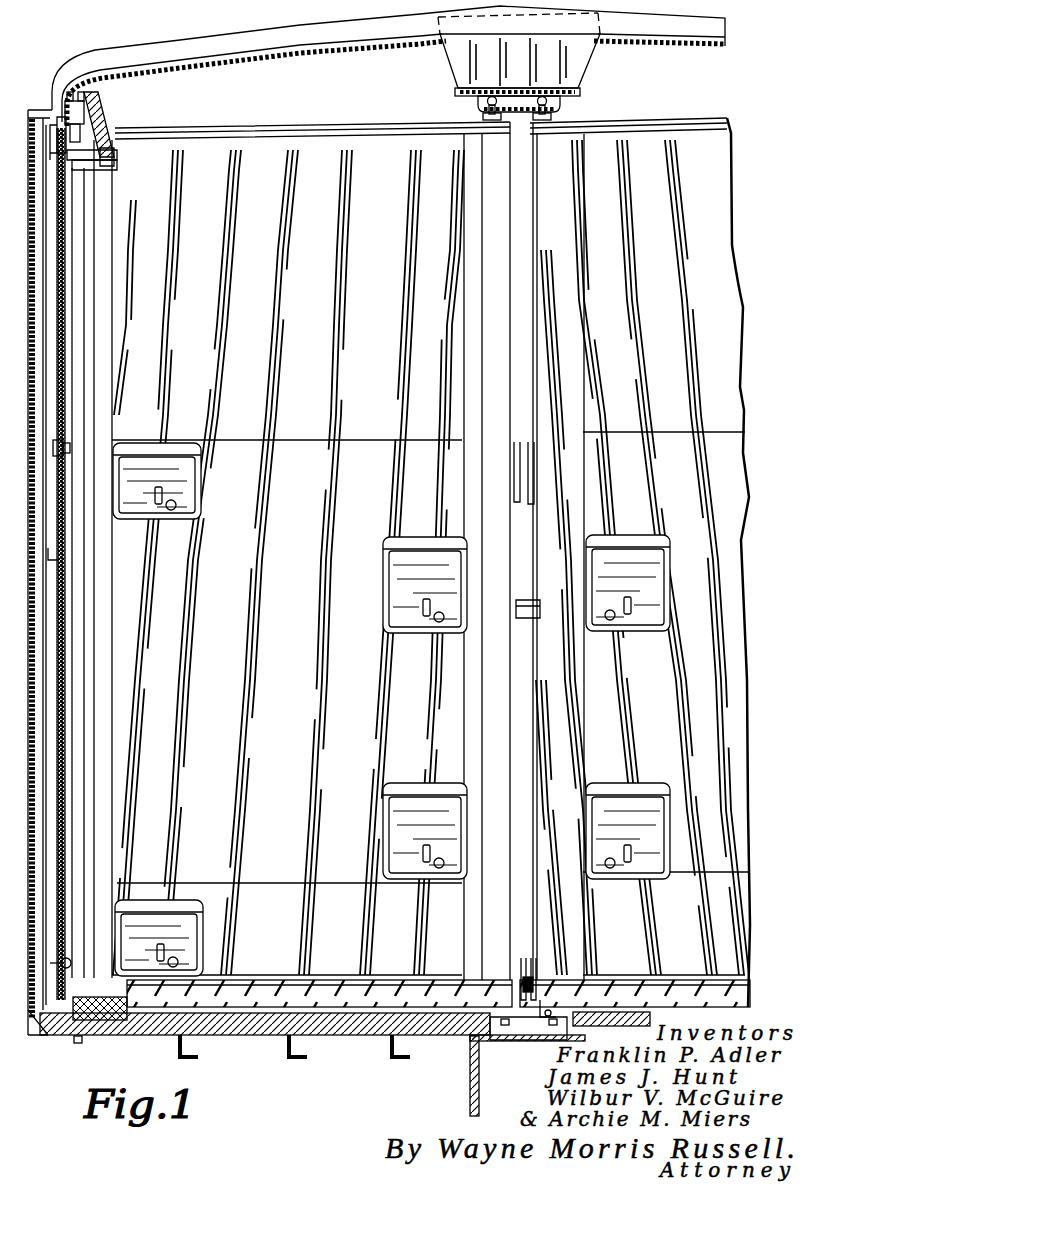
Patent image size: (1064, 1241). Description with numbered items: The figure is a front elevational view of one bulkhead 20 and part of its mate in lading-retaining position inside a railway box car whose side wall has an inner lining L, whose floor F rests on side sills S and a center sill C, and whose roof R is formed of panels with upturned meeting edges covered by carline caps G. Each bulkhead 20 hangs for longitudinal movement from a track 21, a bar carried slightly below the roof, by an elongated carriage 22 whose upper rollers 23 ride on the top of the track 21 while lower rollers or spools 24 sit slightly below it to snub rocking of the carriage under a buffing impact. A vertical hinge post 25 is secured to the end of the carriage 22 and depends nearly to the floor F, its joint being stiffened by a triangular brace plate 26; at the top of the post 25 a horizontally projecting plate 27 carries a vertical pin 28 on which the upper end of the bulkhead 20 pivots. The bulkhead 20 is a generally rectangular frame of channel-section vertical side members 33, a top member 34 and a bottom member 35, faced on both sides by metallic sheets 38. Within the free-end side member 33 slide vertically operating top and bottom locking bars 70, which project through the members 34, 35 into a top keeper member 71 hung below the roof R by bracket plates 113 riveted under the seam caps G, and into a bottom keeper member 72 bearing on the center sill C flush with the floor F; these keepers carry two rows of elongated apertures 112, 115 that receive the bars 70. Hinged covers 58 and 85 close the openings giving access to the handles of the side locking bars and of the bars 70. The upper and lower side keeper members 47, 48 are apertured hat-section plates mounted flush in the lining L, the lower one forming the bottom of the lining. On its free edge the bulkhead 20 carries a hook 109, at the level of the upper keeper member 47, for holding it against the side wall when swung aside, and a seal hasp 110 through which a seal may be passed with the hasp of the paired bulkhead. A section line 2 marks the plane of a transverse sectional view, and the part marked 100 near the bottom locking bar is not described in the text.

The carline caps G is at (150, 44).
The roof R is at (262, 62).
The section line 2 is at (258, 21).
The bulkhead 20 is at (314, 123).
The track 21 is at (98, 118).
The carriage 22 is at (104, 135).
The upper rollers 23 is at (80, 92).
The lower rollers or spools 24 is at (58, 158).
The hinge post 25 is at (73, 341).
The triangular brace plate 26 is at (56, 226).
The horizontally projecting plate 27 is at (98, 170).
The vertical pin 28 is at (118, 154).
The vertical side members 33 is at (577, 303).
The top member 34 is at (234, 128).
The bottom member 35 is at (244, 990).
The metallic sheets 38 is at (318, 269).
The upper side keeper member 47 is at (70, 452).
The lower side keeper member 48 is at (66, 958).
The cover 58 is at (170, 479).
The top and bottom locking bars 70 is at (484, 101).
The top keeper member 71 is at (560, 100).
The bottom keeper member 72 is at (527, 1029).
The cover 85 is at (440, 581).
The pivot 100 is at (526, 964).
The hook 109 is at (530, 470).
The seal hasp 110 is at (522, 605).
The apertures 112 is at (496, 110).
The bracket plates 113 is at (582, 58).
The apertures 115 is at (560, 1043).
The side sills S is at (44, 1024).
The floor F is at (332, 1038).
The center sill C is at (470, 1072).
The inner lining L is at (60, 547).